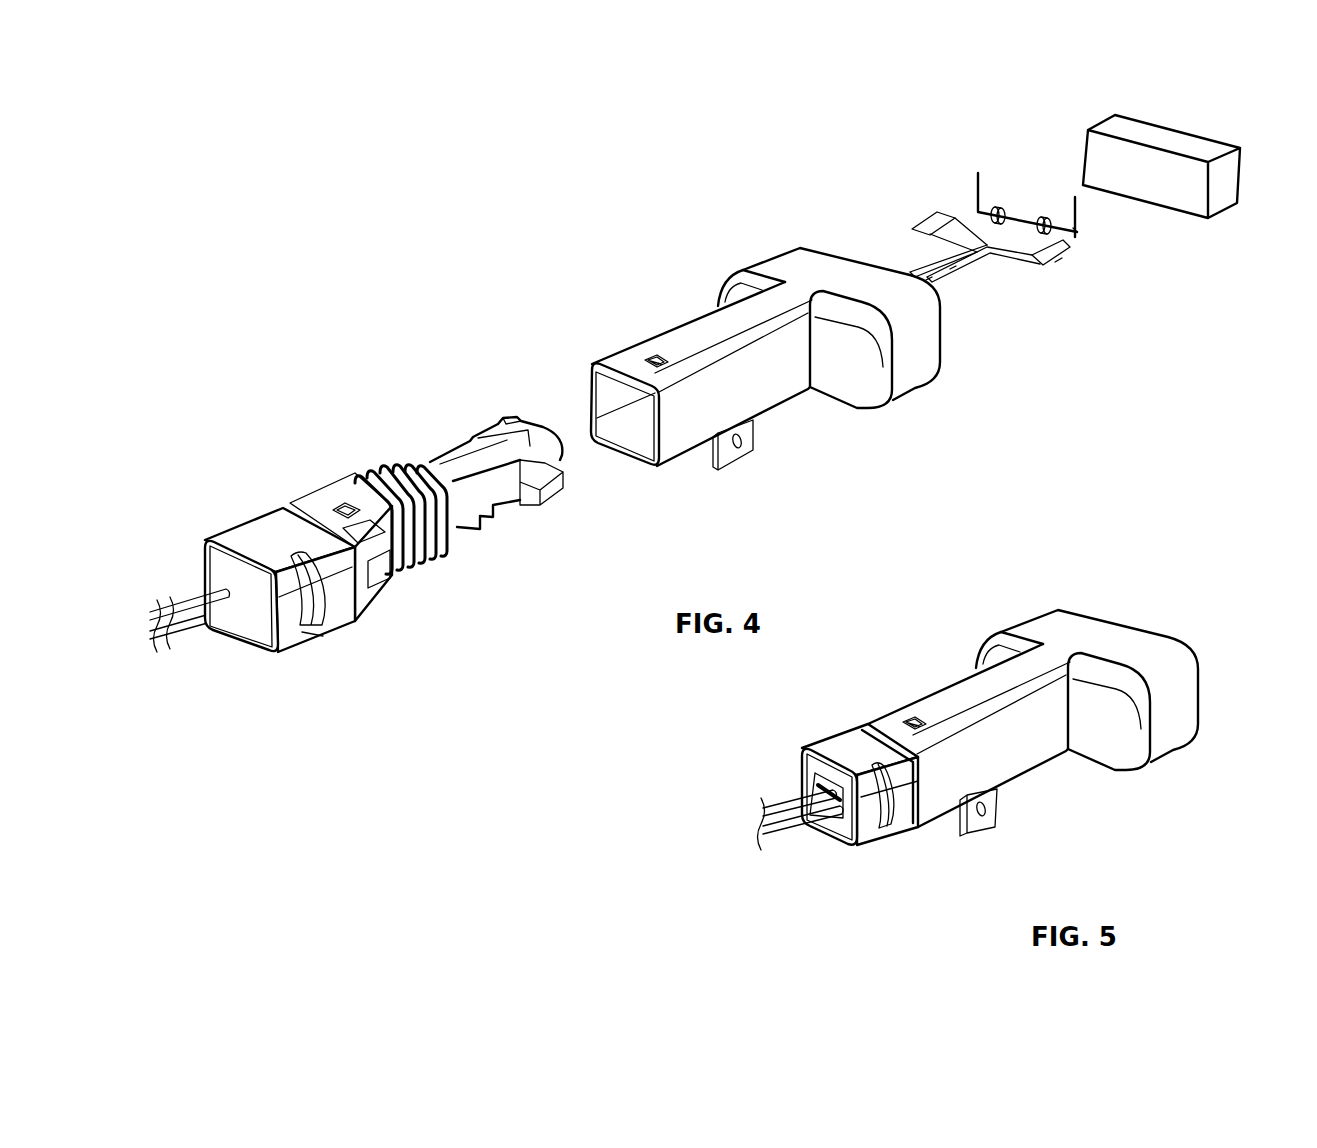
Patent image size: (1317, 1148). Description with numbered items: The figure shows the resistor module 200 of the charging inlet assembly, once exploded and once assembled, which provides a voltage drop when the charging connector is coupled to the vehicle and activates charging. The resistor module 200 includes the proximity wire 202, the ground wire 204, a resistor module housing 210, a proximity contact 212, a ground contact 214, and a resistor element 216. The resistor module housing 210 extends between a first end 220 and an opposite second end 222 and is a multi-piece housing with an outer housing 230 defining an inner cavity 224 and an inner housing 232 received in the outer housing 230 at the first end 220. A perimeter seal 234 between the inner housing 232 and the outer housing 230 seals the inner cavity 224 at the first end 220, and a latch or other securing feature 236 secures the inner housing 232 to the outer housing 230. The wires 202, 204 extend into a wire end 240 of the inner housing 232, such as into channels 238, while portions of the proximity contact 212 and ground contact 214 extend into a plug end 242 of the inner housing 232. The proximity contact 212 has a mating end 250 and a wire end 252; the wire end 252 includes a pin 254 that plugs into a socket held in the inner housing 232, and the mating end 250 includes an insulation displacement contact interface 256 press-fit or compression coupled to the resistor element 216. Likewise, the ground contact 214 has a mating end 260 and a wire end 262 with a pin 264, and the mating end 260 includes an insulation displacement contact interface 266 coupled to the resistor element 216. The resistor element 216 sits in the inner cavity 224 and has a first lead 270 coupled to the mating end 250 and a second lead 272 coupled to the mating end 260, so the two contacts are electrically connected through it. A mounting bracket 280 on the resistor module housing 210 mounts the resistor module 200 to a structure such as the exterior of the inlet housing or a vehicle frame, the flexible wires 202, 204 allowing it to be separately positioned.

In FIG. 4, the resistor module 200 is at (651, 302).
In FIG. 4, the proximity wire 202 is at (185, 612).
In FIG. 5, the proximity wire 202 is at (773, 812).
In FIG. 4, the ground wire 204 is at (968, 262).
In FIG. 5, the ground wire 204 is at (787, 832).
In FIG. 4, the resistor module housing 210 is at (884, 456).
In FIG. 5, the resistor module housing 210 is at (1134, 606).
In FIG. 4, the proximity contact 212 is at (935, 212).
In FIG. 4, the ground contact 214 is at (1043, 268).
In FIG. 4, the resistor element 216 is at (1018, 212).
In FIG. 4, the first end 220 is at (268, 652).
In FIG. 5, the first end 220 is at (847, 832).
In FIG. 4, the second end 222 is at (945, 357).
In FIG. 5, the second end 222 is at (1203, 700).
In FIG. 4, the inner cavity 224 is at (623, 447).
In FIG. 5, the inner cavity 224 is at (849, 740).
In FIG. 4, the outer housing 230 is at (765, 397).
In FIG. 5, the outer housing 230 is at (985, 763).
In FIG. 4, the inner housing 232 is at (373, 592).
In FIG. 5, the inner housing 232 is at (872, 832).
In FIG. 4, the perimeter seal 234 is at (380, 462).
In FIG. 4, the latch 236 is at (345, 505).
In FIG. 5, the latch 236 is at (913, 724).
In FIG. 4, the channels 238 is at (1228, 180).
In FIG. 5, the channels 238 is at (803, 786).
In FIG. 4, the wire end 240 is at (259, 648).
In FIG. 5, the wire end 240 is at (806, 757).
In FIG. 4, the plug end 242 is at (565, 486).
In FIG. 4, the mating end 250 is at (947, 204).
In FIG. 4, the wire end 252 is at (911, 268).
In FIG. 4, the pin 254 is at (910, 231).
In FIG. 4, the insulation displacement contact interface 256 is at (986, 244).
In FIG. 4, the mating end 260 is at (1060, 265).
In FIG. 4, the wire end 262 is at (930, 280).
In FIG. 4, the pin 264 is at (953, 268).
In FIG. 4, the insulation displacement contact interface 266 is at (1077, 230).
In FIG. 4, the first lead 270 is at (993, 207).
In FIG. 4, the second lead 272 is at (1065, 230).
In FIG. 4, the mounting bracket 280 is at (733, 467).
In FIG. 5, the mounting bracket 280 is at (973, 838).